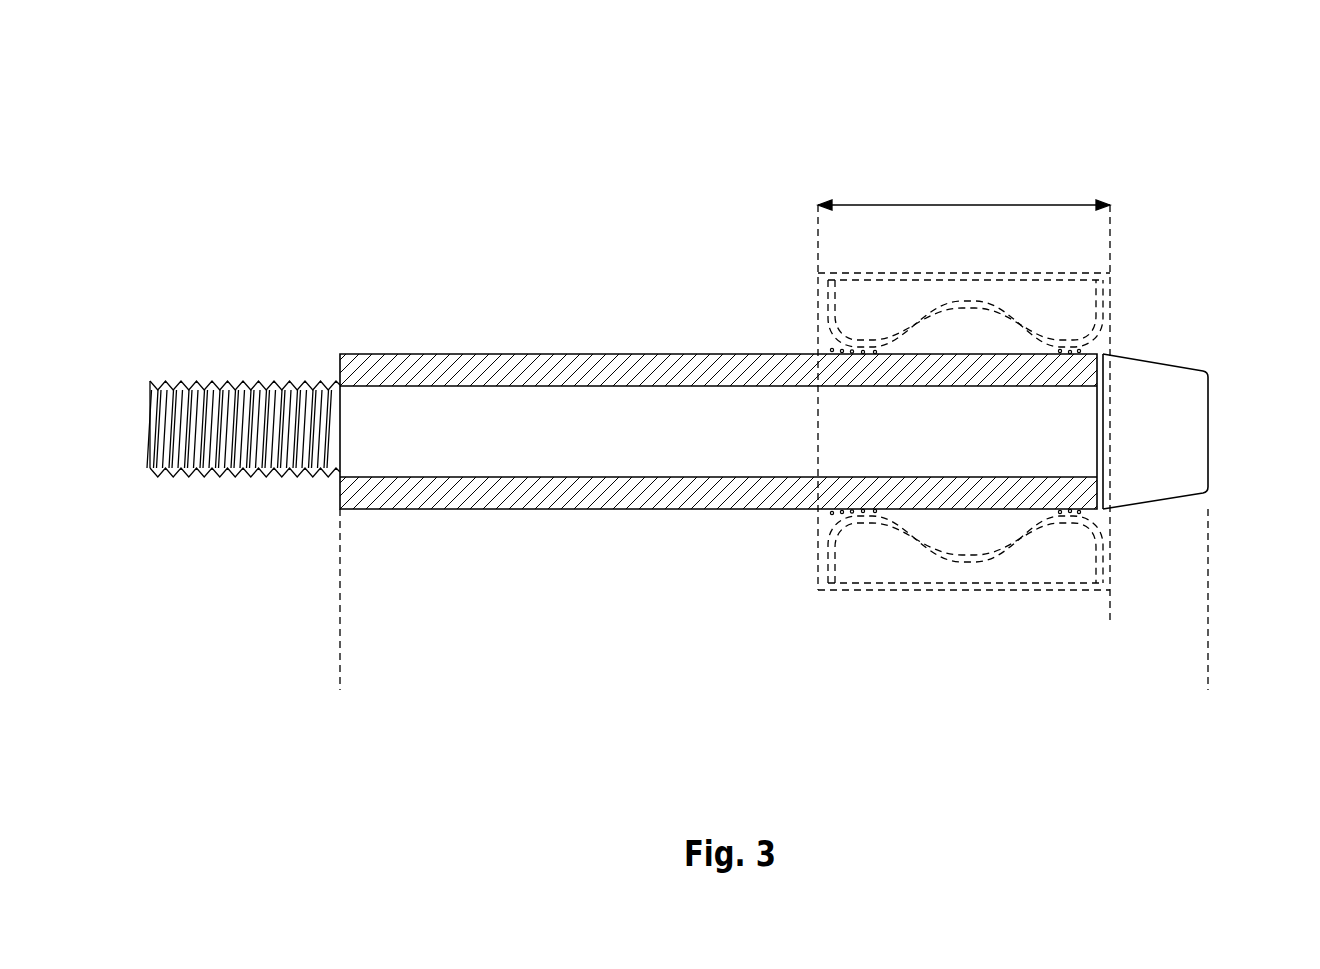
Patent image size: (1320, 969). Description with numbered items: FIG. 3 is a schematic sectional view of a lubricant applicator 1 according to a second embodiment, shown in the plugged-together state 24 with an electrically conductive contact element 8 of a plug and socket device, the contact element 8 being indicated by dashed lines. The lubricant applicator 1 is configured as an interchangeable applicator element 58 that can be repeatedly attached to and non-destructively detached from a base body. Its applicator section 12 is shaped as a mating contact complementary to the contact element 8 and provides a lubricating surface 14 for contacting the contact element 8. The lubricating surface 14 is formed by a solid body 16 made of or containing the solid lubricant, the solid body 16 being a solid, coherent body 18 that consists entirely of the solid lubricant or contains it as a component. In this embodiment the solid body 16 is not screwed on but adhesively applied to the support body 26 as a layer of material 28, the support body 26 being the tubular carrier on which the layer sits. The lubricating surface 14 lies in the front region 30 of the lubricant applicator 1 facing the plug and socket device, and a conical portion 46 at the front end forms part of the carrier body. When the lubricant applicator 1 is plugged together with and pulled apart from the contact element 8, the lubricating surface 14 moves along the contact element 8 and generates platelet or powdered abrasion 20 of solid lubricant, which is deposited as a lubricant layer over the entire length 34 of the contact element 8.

The lubricant applicator 1 is at (733, 387).
The interchangeable applicator element 58 is at (1216, 60).
The contact element 8 is at (1110, 300).
The applicator section 12 is at (340, 620).
The lubricating surface 14 is at (757, 509).
The solid body 16 is at (718, 525).
The coherent body 18 is at (718, 525).
The abrasion 20 is at (880, 352).
The plugged-together state 24 is at (1040, 168).
The support body 26 is at (545, 410).
The layer of material 28 is at (600, 488).
The front region 30 is at (340, 690).
The length 34 is at (965, 205).
The conical portion 46 is at (1208, 620).